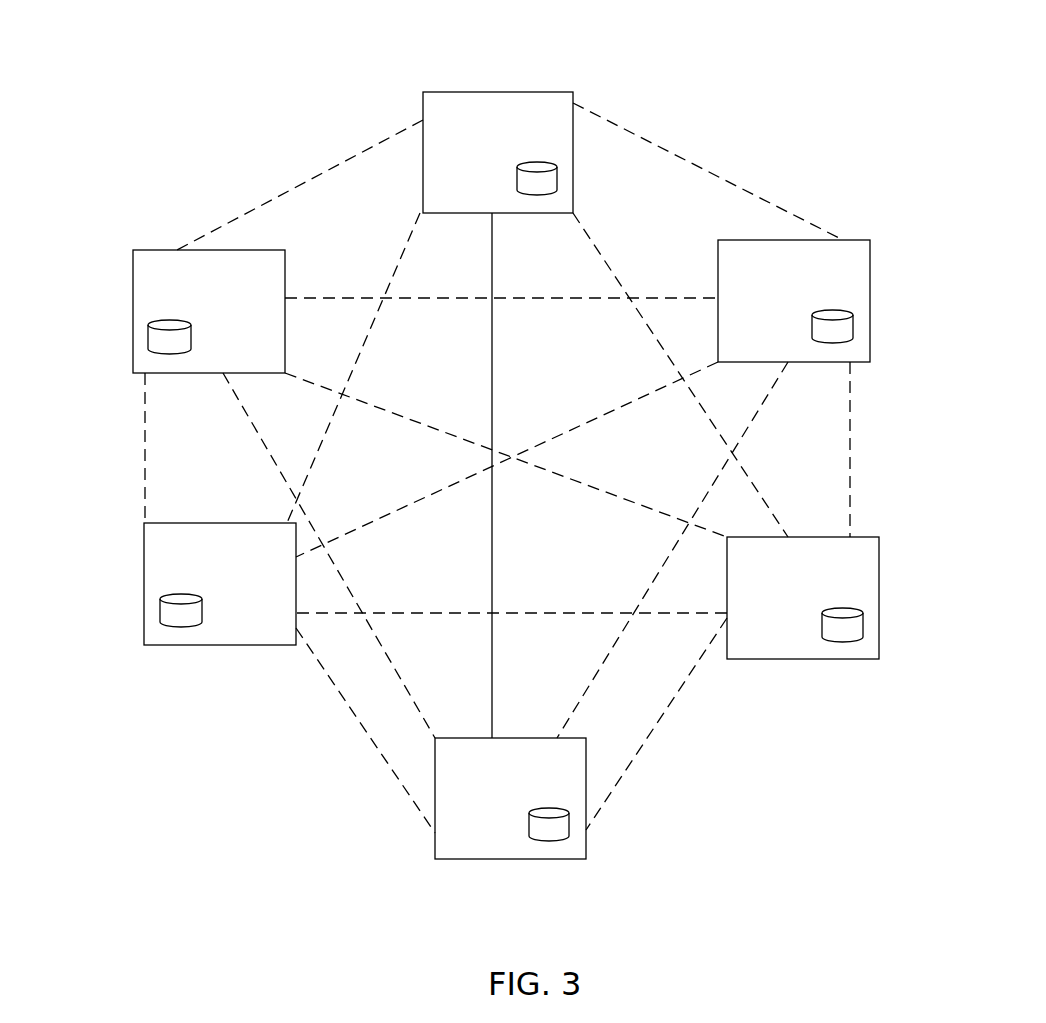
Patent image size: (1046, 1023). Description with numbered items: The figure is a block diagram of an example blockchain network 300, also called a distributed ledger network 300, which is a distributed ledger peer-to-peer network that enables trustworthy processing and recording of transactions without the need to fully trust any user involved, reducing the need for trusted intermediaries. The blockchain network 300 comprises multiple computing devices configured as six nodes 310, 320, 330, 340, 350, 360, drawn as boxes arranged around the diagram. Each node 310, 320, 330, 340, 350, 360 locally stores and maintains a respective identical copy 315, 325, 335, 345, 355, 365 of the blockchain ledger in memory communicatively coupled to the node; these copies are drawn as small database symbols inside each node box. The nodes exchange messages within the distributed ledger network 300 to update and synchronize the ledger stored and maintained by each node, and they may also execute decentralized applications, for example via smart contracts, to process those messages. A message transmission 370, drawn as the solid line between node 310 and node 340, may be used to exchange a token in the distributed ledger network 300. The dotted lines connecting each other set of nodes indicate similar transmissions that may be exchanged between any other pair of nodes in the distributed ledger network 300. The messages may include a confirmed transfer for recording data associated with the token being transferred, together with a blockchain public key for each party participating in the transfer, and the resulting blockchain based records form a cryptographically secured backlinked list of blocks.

The blockchain network 300 is at (803, 67).
The node 310 is at (502, 92).
The copy of the blockchain ledger 315 is at (557, 178).
The node 320 is at (870, 275).
The copy of the blockchain ledger 325 is at (853, 327).
The node 330 is at (879, 568).
The copy of the blockchain ledger 335 is at (863, 620).
The node 340 is at (435, 849).
The copy of the blockchain ledger 345 is at (550, 841).
The node 350 is at (144, 587).
The copy of the blockchain ledger 355 is at (180, 627).
The node 360 is at (133, 272).
The copy of the blockchain ledger 365 is at (148, 337).
The message transmission 370 is at (492, 538).